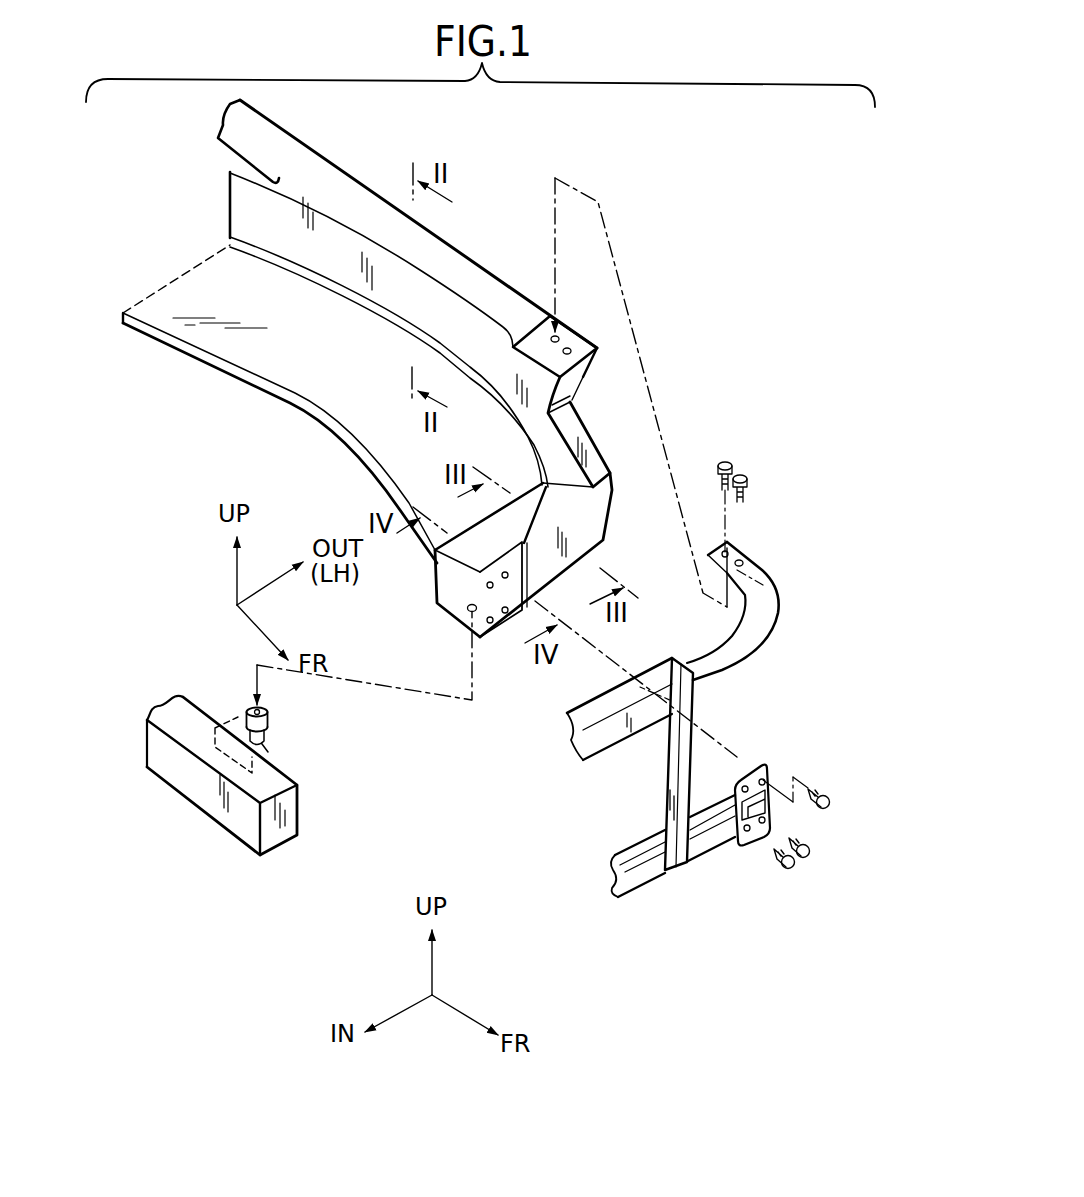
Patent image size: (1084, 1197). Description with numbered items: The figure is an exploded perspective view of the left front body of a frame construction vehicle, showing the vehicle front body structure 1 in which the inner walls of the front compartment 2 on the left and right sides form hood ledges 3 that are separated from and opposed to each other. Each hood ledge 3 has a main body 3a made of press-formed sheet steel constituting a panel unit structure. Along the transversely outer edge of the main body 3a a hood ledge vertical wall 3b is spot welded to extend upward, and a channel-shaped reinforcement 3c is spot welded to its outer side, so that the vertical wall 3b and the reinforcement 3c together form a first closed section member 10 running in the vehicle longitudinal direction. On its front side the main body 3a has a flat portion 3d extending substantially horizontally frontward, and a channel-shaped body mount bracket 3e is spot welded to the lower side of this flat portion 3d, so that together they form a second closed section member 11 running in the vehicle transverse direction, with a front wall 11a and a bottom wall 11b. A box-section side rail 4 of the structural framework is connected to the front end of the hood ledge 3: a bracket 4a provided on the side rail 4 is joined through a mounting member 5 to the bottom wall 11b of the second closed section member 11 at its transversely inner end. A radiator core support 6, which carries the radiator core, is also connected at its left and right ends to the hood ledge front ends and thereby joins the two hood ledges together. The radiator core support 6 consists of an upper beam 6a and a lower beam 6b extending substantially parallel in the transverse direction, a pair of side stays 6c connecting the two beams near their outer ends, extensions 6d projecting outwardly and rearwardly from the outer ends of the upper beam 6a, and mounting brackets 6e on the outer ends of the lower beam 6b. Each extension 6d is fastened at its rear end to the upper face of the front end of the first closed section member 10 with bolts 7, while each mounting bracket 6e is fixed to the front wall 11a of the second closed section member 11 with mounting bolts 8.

The vehicle front body structure 1 is at (653, 228).
The front compartment 2 is at (220, 453).
The hood ledge 3 is at (257, 390).
The main body 3a is at (387, 435).
The hood ledge vertical wall 3b is at (468, 322).
The reinforcement 3c is at (505, 300).
The flat portion 3d is at (448, 575).
The body mount bracket 3e is at (452, 620).
The side rail 4 is at (198, 783).
The bracket 4a is at (240, 722).
The mounting member 5 is at (268, 725).
The radiator core support 6 is at (593, 722).
The upper beam 6a is at (642, 712).
The lower beam 6b is at (630, 870).
The side stay 6c is at (672, 776).
The extension 6d is at (775, 608).
The mounting bracket 6e is at (773, 773).
The bolts 7 is at (731, 461).
The mounting bolts 8 is at (796, 868).
The first closed section member 10 is at (445, 247).
The second closed section member 11 is at (545, 573).
The front wall 11a is at (500, 612).
The bottom wall 11b is at (464, 630).